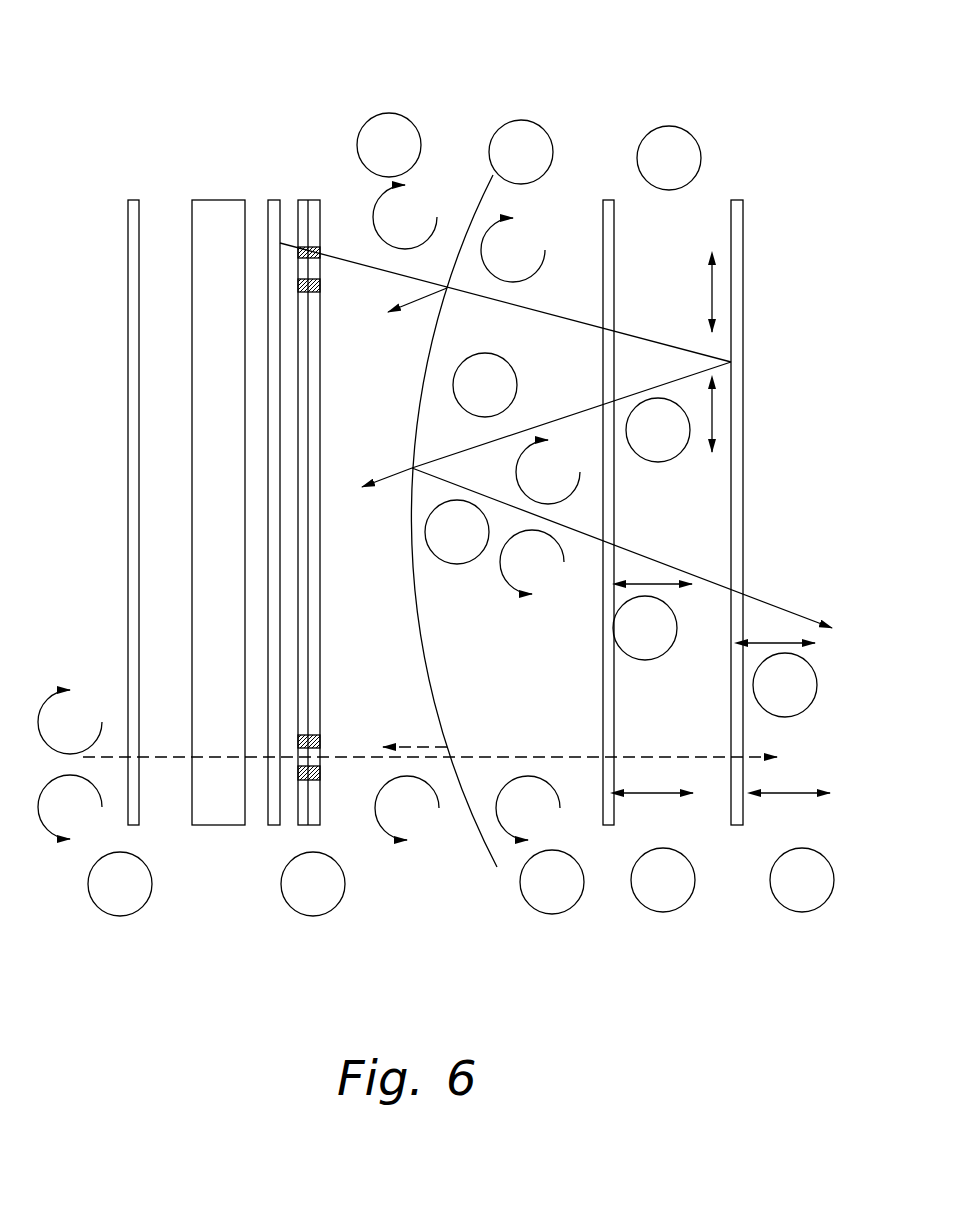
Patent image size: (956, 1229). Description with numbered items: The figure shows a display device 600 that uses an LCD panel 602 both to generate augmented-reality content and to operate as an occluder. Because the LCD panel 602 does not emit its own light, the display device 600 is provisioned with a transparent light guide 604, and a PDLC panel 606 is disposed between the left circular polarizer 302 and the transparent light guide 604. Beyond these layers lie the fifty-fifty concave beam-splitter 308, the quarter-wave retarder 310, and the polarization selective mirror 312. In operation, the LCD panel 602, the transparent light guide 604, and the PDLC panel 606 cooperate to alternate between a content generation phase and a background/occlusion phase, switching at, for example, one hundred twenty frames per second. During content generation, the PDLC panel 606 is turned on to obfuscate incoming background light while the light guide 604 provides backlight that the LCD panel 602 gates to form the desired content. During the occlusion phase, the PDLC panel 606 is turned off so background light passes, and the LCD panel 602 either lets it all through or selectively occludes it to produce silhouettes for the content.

The display device 600 is at (713, 38).
The left circular polarizer 302 is at (128, 232).
The PDLC panel 606 is at (218, 200).
The transparent light guide 604 is at (274, 200).
The LCD panel 602 is at (313, 200).
The 50/50 concave beam-splitter 308 is at (419, 641).
The quarter-wave retarder 310 is at (614, 250).
The polarization selective mirror 312 is at (743, 250).